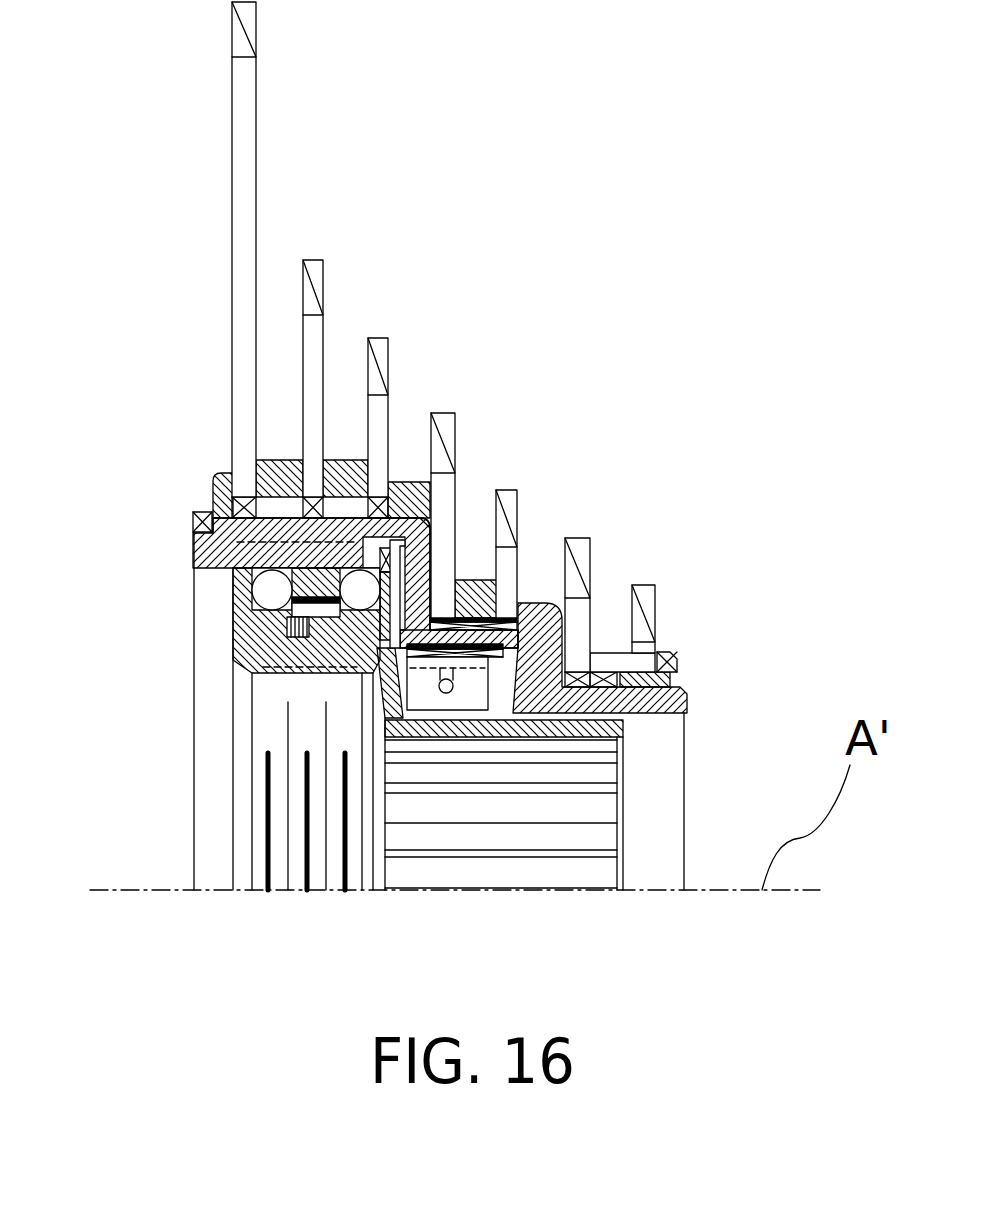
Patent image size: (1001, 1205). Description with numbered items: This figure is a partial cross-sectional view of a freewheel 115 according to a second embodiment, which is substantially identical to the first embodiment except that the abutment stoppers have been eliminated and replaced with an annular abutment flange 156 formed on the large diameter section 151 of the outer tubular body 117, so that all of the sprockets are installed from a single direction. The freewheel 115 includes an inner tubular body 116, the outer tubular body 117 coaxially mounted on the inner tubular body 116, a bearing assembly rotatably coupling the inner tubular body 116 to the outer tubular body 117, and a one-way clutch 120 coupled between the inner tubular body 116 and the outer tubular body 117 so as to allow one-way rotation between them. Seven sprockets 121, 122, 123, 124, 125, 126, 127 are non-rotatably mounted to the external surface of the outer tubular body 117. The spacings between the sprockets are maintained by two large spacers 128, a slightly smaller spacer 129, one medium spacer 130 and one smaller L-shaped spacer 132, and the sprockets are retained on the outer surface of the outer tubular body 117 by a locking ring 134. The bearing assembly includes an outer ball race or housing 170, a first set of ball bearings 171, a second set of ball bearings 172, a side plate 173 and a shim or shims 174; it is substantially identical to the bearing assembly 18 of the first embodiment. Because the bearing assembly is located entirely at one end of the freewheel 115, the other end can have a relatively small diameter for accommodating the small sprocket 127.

The freewheel 115 is at (421, 489).
The inner tubular body 116 is at (226, 657).
The outer tubular body 117 is at (210, 468).
The bearing assembly 18 is at (205, 583).
The one-way clutch 120 is at (500, 704).
The sprocket 121 is at (257, 88).
The sprocket 122 is at (309, 258).
The sprocket 123 is at (378, 337).
The sprocket 124 is at (445, 412).
The sprocket 125 is at (505, 489).
The sprocket 126 is at (577, 536).
The small sprocket 127 is at (645, 584).
The large spacer 128 is at (272, 470).
The slightly smaller spacer 129 is at (412, 490).
The medium spacer 130 is at (475, 580).
The L-shaped spacer 132 is at (540, 603).
The locking ring 134 is at (682, 664).
The large diameter section 151 is at (212, 468).
The annular abutment flange 156 is at (222, 497).
The outer ball race 170 is at (200, 553).
The first set of ball bearings 171 is at (268, 590).
The second set of ball bearings 172 is at (300, 600).
The side plate 173 is at (345, 625).
The shim 174 is at (355, 592).